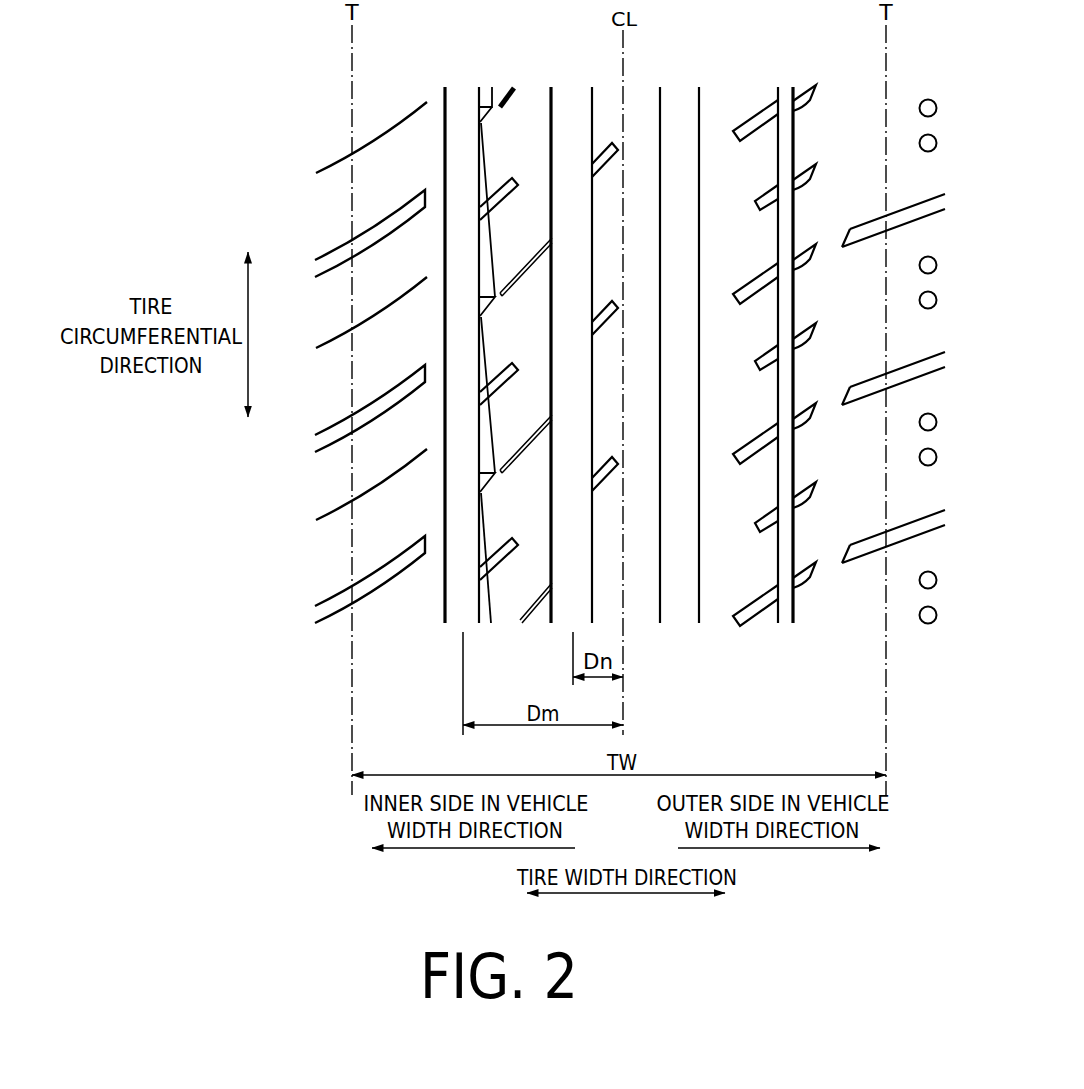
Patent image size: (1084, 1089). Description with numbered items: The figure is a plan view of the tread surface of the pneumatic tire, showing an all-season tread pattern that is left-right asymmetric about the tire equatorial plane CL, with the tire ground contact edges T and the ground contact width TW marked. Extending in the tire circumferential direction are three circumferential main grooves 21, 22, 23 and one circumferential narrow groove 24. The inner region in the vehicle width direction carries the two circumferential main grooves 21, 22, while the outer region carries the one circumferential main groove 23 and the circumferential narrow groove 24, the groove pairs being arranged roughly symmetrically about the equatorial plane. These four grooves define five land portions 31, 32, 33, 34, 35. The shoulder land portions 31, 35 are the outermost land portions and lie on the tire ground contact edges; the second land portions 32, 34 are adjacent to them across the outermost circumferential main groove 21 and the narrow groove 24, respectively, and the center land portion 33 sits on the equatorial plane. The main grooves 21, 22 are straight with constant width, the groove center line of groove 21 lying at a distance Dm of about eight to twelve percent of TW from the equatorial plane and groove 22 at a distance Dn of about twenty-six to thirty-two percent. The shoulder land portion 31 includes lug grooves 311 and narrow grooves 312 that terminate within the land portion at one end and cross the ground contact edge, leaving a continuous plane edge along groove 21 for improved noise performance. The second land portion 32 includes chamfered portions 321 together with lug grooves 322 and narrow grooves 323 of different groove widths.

The circumferential main groove 21 is at (463, 86).
The circumferential main groove 22 is at (572, 85).
The circumferential main groove 23 is at (687, 87).
The circumferential narrow groove 24 is at (788, 85).
The shoulder land portion 31 is at (367, 327).
The second land portion 32 is at (516, 327).
The center land portion 33 is at (635, 90).
The second land portion 34 is at (737, 97).
The shoulder land portion 35 is at (833, 97).
The lug groove 311 is at (327, 253).
The narrow groove 312 is at (327, 165).
The chamfered portion 321 is at (489, 243).
The lug groove 322 is at (497, 190).
The narrow groove 323 is at (532, 262).